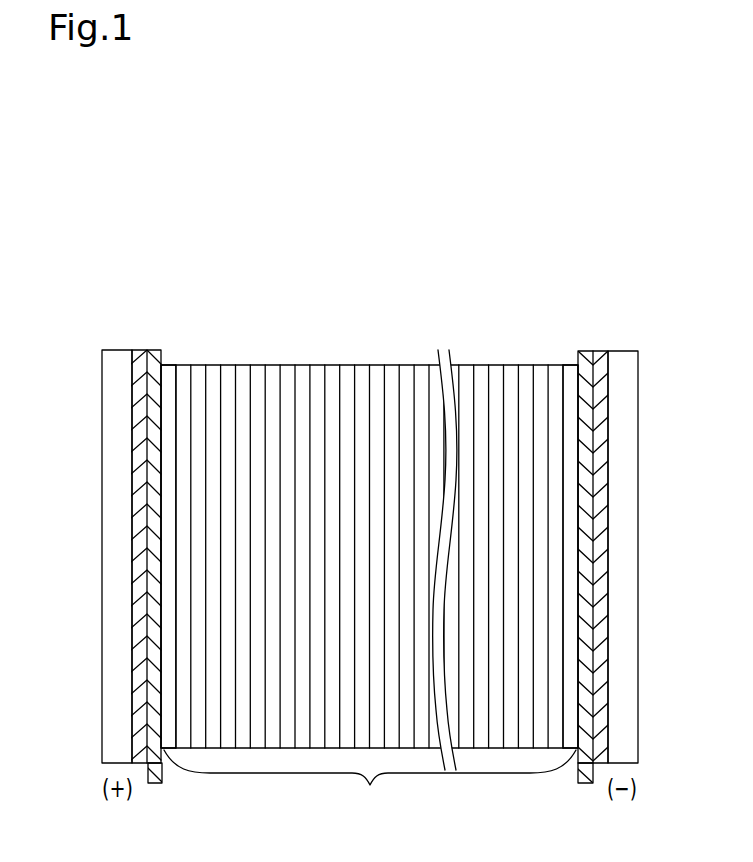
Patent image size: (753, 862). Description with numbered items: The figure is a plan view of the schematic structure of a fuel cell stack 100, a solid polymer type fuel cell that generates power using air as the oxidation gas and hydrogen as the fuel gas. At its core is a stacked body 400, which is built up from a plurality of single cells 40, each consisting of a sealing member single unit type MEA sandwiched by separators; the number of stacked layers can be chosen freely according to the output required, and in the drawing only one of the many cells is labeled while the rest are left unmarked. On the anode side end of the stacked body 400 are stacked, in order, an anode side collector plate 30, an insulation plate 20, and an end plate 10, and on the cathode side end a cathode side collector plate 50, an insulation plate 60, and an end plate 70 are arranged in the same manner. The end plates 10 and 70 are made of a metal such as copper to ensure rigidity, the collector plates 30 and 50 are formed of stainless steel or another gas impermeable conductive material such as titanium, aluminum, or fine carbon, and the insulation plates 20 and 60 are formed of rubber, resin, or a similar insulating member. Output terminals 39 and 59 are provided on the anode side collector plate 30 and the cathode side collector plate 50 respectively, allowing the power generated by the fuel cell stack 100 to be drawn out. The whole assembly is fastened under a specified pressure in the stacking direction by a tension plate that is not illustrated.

The fuel cell stack 100 is at (556, 268).
The end plate 10 is at (125, 349).
The insulation plate 20 is at (138, 350).
The anode side collector plate 30 is at (163, 364).
The output terminal 39 is at (155, 785).
The single cell 40 is at (370, 539).
The stacked body 400 is at (370, 787).
The cathode side collector plate 50 is at (580, 364).
The output terminal 59 is at (586, 785).
The insulation plate 60 is at (601, 351).
The end plate 70 is at (620, 350).